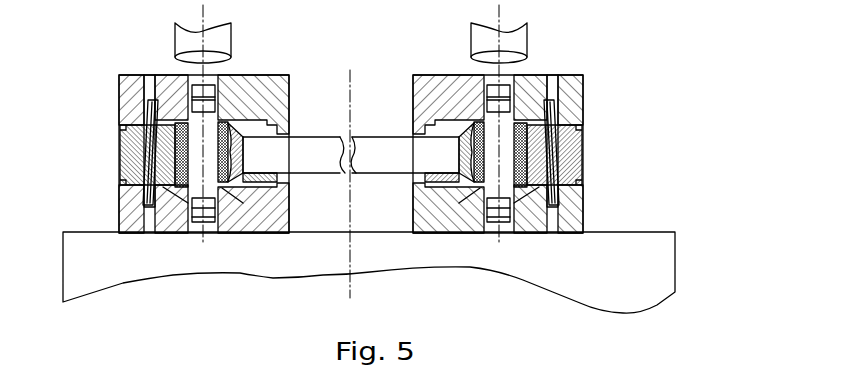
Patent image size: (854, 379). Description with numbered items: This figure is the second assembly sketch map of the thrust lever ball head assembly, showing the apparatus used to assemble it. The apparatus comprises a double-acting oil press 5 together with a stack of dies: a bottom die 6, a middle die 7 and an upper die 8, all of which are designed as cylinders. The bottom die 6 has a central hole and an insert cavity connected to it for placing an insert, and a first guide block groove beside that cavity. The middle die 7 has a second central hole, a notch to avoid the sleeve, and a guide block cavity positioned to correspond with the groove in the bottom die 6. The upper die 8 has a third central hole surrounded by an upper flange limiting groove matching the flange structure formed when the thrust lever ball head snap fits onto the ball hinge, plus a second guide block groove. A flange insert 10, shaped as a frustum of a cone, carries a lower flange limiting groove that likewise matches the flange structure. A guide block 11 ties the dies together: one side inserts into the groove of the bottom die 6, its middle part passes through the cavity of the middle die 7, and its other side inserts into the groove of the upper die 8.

The double-acting oil press 5 is at (525, 38).
The bottom die 6 is at (583, 215).
The middle die 7 is at (583, 150).
The upper die 8 is at (583, 91).
The flange insert 10 is at (529, 187).
The guide block 11 is at (556, 208).